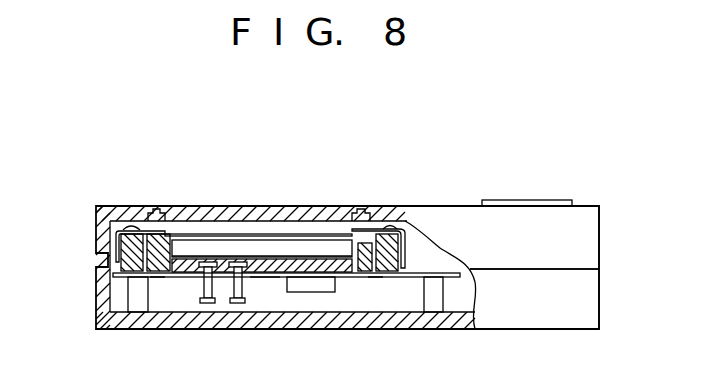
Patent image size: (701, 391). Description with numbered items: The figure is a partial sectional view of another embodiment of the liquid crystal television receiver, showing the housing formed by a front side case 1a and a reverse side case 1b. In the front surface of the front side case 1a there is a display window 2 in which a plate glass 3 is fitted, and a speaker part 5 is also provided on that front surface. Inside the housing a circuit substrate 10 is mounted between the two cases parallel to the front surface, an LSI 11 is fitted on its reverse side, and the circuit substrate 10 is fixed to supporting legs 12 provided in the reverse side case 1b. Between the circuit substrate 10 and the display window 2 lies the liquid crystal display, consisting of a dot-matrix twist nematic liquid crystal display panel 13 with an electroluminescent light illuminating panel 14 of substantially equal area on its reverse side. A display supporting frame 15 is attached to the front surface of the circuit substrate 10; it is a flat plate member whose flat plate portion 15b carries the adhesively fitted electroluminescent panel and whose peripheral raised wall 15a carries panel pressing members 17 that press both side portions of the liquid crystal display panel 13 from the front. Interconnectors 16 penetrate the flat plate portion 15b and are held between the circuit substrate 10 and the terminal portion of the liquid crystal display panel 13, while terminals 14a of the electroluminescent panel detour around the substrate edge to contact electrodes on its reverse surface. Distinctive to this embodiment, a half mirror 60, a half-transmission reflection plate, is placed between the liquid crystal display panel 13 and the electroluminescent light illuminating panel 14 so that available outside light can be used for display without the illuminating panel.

The front side case 1a is at (600, 237).
The reverse side case 1b is at (600, 294).
The display window 2 is at (229, 200).
The plate glass 3 is at (248, 217).
The speaker part 5 is at (527, 200).
The circuit substrate 10 is at (342, 279).
The LSI 11 is at (316, 293).
The supporting legs 12 is at (132, 292).
The liquid crystal display panel 13 is at (297, 238).
The electroluminescent light illuminating panel 14 is at (318, 266).
The terminals 14a is at (203, 303).
The display supporting frame 15 is at (405, 257).
The raised wall 15a is at (120, 252).
The flat plate portion 15b is at (264, 286).
The interconnectors 16 is at (157, 278).
The panel pressing members 17 is at (152, 214).
The half mirror 60 is at (190, 254).